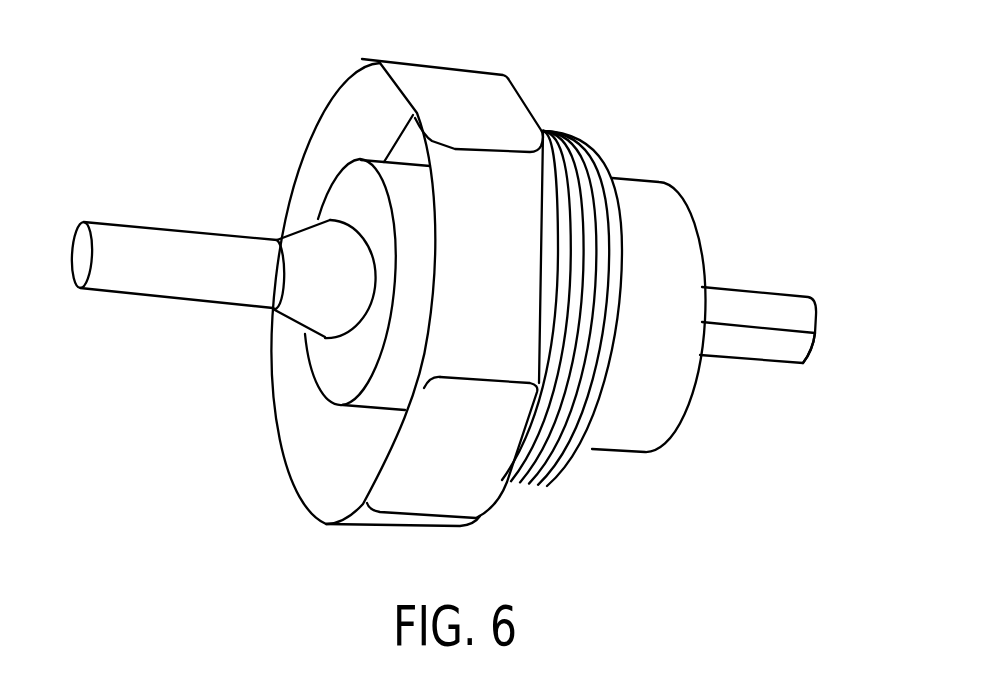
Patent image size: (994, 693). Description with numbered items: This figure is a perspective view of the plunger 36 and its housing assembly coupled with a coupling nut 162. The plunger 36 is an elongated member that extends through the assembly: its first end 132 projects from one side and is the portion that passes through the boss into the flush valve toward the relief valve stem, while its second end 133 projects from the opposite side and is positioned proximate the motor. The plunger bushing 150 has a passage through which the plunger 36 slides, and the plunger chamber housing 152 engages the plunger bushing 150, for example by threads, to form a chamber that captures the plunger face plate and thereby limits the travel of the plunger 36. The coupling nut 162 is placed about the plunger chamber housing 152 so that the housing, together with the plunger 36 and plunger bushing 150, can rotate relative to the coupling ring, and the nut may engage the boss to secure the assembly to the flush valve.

The first end 132 is at (165, 237).
The plunger bushing 150 is at (340, 187).
The coupling nut 162 is at (384, 527).
The plunger chamber housing 152 is at (697, 236).
The plunger 36 is at (778, 290).
The second end 133 is at (809, 338).